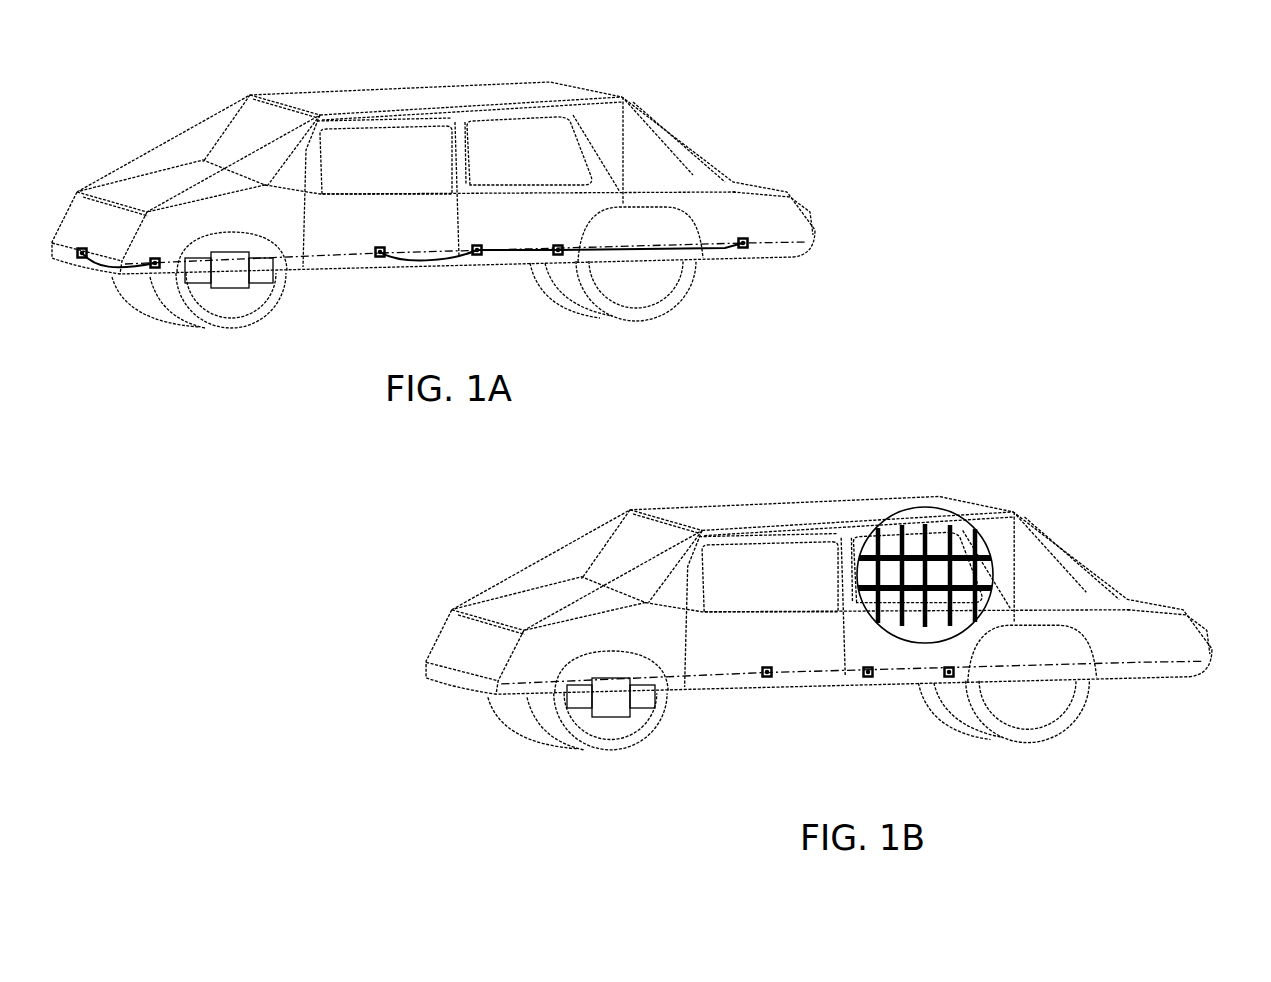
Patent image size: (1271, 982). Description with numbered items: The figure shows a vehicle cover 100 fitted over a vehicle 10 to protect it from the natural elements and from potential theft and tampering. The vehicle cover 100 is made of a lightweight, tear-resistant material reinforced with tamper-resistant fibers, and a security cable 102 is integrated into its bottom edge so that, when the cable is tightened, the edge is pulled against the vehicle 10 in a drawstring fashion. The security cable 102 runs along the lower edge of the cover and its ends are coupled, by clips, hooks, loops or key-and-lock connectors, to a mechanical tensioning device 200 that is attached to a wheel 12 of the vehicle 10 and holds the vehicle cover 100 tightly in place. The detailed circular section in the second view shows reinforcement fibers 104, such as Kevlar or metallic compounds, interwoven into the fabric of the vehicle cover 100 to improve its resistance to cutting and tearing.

In FIG. 1A, the vehicle 10 is at (820, 68).
In FIG. 1B, the vehicle 10 is at (1067, 397).
In FIG. 1A, the wheel 12 is at (262, 314).
In FIG. 1A, the vehicle cover 100 is at (652, 108).
In FIG. 1B, the vehicle cover 100 is at (1053, 513).
In FIG. 1A, the security cable 102 is at (102, 268).
In FIG. 1B, the security cable 102 is at (858, 672).
In FIG. 1B, the reinforcement fibers 104 is at (925, 507).
In FIG. 1A, the mechanical tensioning device 200 is at (230, 291).
In FIG. 1B, the mechanical tensioning device 200 is at (610, 718).